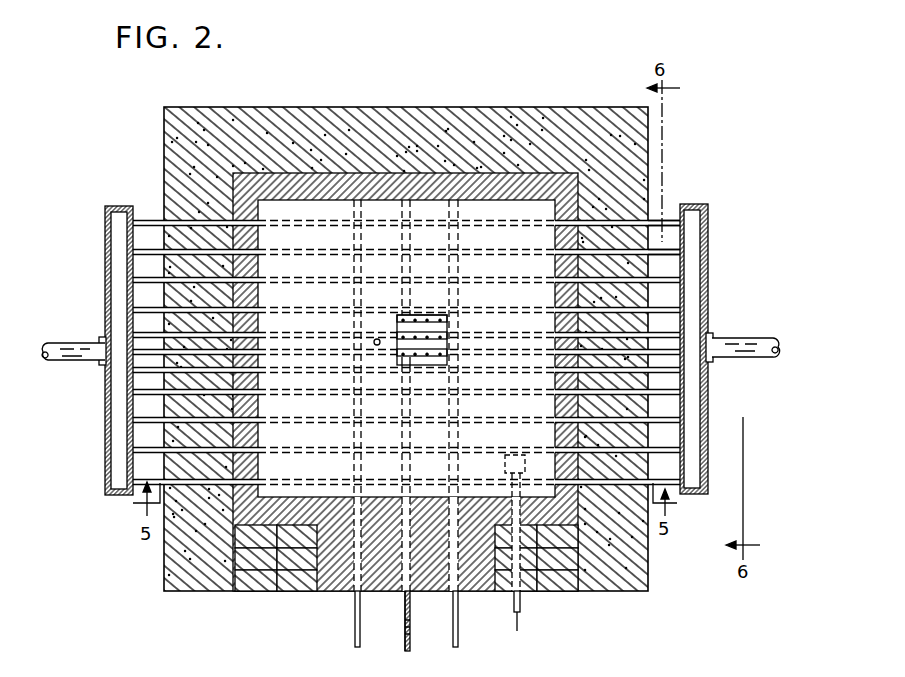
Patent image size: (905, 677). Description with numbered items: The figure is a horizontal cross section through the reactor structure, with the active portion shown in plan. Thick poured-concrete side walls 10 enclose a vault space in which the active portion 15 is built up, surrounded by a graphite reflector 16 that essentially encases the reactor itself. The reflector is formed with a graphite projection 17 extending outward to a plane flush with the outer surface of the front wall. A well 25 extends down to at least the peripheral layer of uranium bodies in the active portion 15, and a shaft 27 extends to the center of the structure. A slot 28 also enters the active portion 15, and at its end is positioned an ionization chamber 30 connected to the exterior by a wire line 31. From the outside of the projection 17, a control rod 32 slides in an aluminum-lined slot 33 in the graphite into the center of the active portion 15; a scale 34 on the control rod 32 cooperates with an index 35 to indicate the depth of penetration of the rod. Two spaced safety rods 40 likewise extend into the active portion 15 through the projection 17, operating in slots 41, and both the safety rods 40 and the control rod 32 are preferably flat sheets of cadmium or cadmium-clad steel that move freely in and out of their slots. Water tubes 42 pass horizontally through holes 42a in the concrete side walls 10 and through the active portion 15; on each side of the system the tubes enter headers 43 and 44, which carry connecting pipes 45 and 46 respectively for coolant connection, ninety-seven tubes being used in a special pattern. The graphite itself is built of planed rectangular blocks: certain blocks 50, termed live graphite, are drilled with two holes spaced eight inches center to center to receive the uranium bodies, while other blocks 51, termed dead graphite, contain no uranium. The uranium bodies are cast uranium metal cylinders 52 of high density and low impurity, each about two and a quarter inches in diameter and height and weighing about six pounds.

The side walls 10 is at (626, 582).
The active portion 15 is at (488, 212).
The graphite reflector 16 is at (537, 183).
The graphite projection 17 is at (410, 592).
The well 25 is at (412, 366).
The shaft 27 is at (377, 339).
The slot 28 is at (520, 510).
The ionization chamber 30 is at (505, 464).
The wire line 31 is at (521, 616).
The control rod 32 is at (405, 640).
The aluminum-lined slot 33 is at (360, 600).
The scale 34 is at (405, 625).
The index 35 is at (443, 625).
The safety rods 40 is at (459, 628).
The slots 41 is at (463, 593).
The water tubes 42 is at (646, 170).
The holes 42a is at (647, 192).
The header 43 is at (105, 233).
The header 44 is at (708, 267).
The connecting pipe 45 is at (73, 318).
The connecting pipe 46 is at (730, 340).
The live graphite blocks 50 is at (441, 316).
The dead graphite blocks 51 is at (447, 332).
The uranium metal cylinders 52 is at (425, 315).